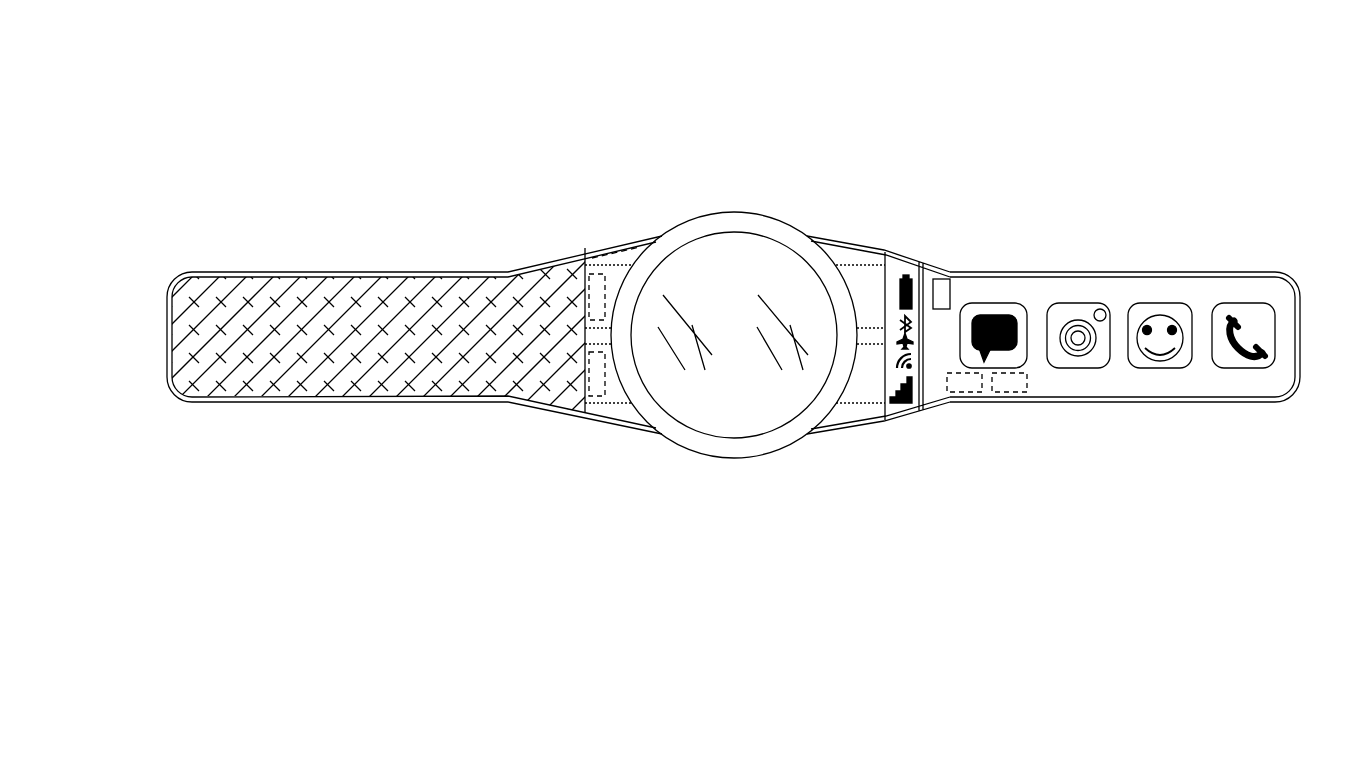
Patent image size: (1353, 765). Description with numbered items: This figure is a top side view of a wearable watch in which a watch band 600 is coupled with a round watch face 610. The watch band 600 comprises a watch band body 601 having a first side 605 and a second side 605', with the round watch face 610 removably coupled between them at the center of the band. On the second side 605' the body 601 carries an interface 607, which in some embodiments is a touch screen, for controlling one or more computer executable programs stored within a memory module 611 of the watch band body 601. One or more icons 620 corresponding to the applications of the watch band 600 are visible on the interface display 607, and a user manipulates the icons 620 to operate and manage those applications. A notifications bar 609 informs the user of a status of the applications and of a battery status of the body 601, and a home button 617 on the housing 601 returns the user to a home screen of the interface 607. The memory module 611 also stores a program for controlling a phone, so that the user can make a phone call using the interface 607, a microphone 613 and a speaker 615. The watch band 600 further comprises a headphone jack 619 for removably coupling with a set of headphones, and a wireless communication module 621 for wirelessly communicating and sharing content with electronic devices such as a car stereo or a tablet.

The watch band 600 is at (180, 69).
The watch band body 601 is at (458, 208).
The first side 605 is at (393, 319).
The second side 605' is at (1053, 338).
The interface 607 is at (1157, 400).
The notifications bar 609 is at (898, 268).
The watch face 610 is at (772, 216).
The memory module 611 is at (957, 393).
The microphone 613 is at (597, 398).
The speaker 615 is at (597, 272).
The home button 617 is at (947, 278).
The headphone jack 619 is at (621, 250).
The icons 620 is at (1160, 304).
The wireless communication module 621 is at (1010, 393).